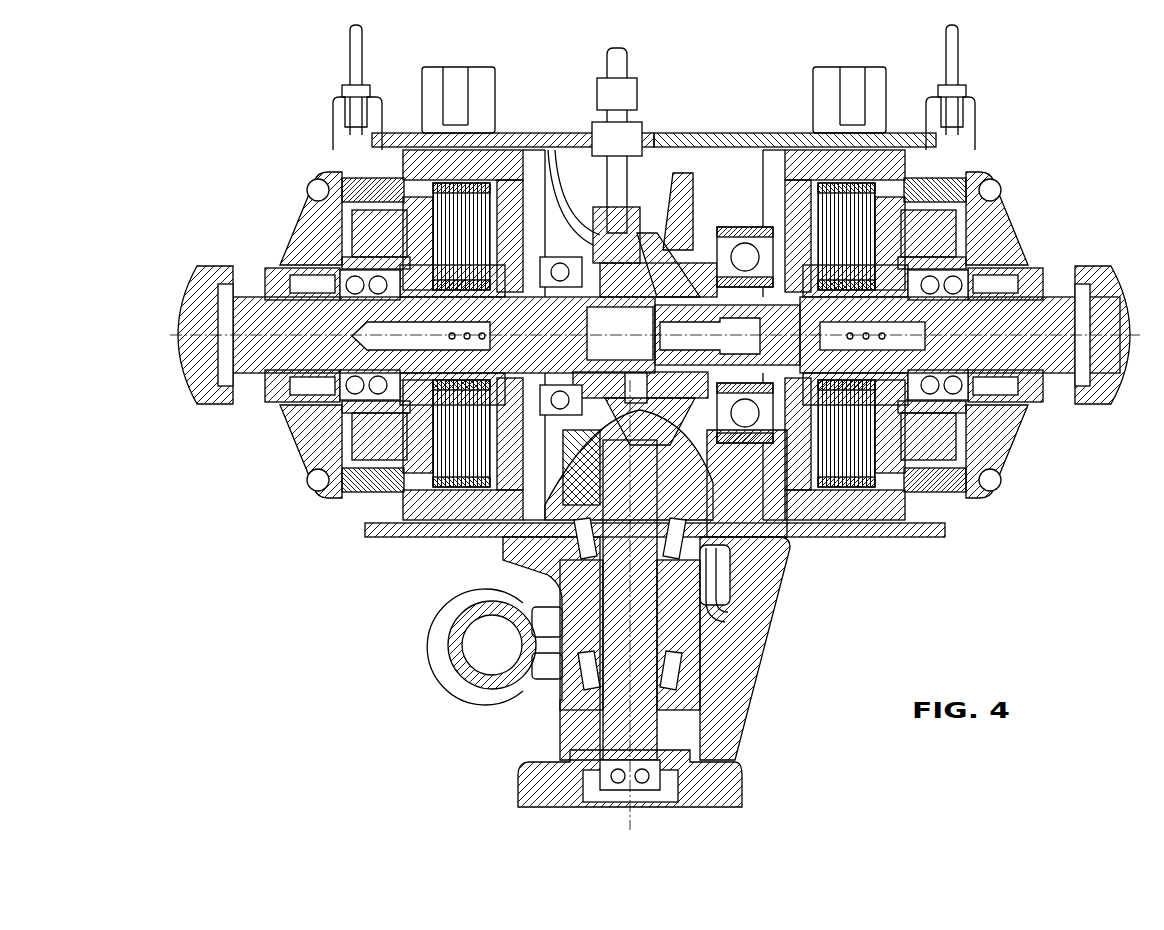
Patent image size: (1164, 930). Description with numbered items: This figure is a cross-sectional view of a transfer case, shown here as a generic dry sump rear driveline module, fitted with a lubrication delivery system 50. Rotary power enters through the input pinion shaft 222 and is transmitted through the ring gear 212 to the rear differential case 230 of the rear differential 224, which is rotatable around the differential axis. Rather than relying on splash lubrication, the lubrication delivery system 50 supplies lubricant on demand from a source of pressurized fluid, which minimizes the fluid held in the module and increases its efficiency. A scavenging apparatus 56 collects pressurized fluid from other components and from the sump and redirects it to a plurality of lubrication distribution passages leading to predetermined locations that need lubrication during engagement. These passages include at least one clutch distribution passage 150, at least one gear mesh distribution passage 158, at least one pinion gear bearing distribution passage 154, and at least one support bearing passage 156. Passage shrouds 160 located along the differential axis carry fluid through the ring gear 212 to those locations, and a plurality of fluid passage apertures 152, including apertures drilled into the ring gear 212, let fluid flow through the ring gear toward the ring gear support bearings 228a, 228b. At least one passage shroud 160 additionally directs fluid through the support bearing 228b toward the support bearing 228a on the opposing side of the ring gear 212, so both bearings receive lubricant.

The lubrication delivery system 50 is at (655, 420).
The scavenging apparatus 56 is at (608, 63).
The clutch distribution passage 150 is at (742, 334).
The fluid passage apertures 152 is at (652, 425).
The pinion gear bearing distribution passage 154 is at (684, 520).
The support bearing passage 156 is at (637, 408).
The gear mesh distribution passage 158 is at (668, 450).
The passage shrouds 160 is at (556, 252).
The ring gear 212 is at (682, 250).
The input pinion shaft 222 is at (650, 662).
The rear differential 224 is at (1052, 293).
The ring gear support bearing 228a is at (540, 235).
The ring gear support bearing 228b is at (752, 232).
The rear differential case 230 is at (363, 531).